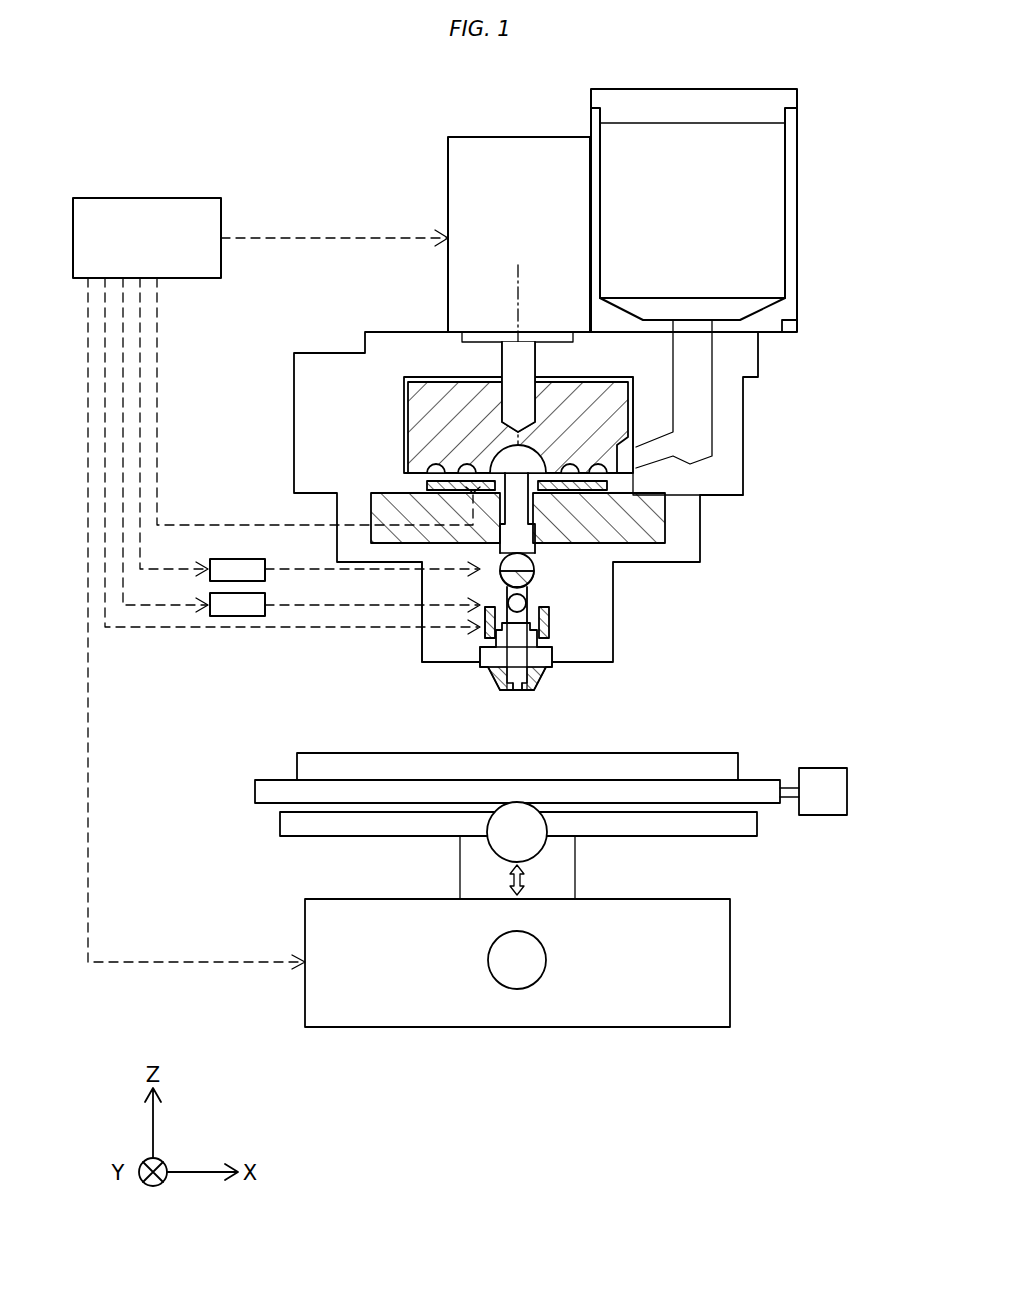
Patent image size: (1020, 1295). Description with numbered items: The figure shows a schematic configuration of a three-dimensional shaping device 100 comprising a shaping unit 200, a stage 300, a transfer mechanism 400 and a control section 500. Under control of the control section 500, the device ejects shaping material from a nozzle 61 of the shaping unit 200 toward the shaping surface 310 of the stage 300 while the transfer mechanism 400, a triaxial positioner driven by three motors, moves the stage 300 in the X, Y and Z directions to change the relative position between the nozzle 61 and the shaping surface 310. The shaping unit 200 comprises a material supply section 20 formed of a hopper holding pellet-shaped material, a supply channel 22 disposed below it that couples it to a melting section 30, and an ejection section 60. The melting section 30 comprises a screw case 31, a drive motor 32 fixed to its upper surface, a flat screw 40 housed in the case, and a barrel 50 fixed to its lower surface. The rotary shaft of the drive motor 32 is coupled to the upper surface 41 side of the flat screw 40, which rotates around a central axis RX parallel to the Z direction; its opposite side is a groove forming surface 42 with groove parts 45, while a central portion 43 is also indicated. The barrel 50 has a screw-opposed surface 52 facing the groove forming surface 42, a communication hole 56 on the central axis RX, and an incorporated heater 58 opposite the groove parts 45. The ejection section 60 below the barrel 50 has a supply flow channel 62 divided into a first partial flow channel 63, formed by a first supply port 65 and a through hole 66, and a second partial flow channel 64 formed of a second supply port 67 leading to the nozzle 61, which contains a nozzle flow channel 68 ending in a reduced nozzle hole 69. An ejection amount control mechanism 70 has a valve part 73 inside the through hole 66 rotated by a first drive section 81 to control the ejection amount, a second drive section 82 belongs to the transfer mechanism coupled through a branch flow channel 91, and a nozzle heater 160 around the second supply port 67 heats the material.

The three-dimensional shaping device 100 is at (192, 136).
The shaping unit 200 is at (322, 154).
The control section 500 is at (137, 198).
The material supply section 20 is at (797, 206).
The supply channel 22 is at (690, 394).
The melting section 30 is at (774, 455).
The screw case 31 is at (418, 332).
The drive motor 32 is at (448, 165).
The central axis RX is at (517, 272).
The flat screw 40 is at (430, 400).
The upper surface 41 is at (428, 378).
The groove forming surface 42 is at (412, 476).
The central portion 43 is at (488, 466).
The groove parts 45 is at (428, 470).
The barrel 50 is at (400, 513).
The screw-opposed surface 52 is at (430, 484).
The communication hole 56 is at (533, 514).
The heater 58 is at (452, 492).
The ejection section 60 is at (316, 668).
The nozzle 61 is at (545, 689).
The supply flow channel 62 is at (646, 640).
The first partial flow channel 63 is at (765, 562).
The second partial flow channel 64 is at (537, 642).
The first supply port 65 is at (535, 562).
The through hole 66 is at (527, 602).
The second supply port 67 is at (516, 656).
The nozzle flow channel 68 is at (548, 672).
The nozzle hole 69 is at (516, 690).
The ejection amount control mechanism 70 is at (360, 590).
The valve part 73 is at (506, 577).
The first drive section 81 is at (243, 559).
The second drive section 82 is at (228, 594).
The branch flow channel 91 is at (549, 615).
The nozzle heater 160 is at (484, 632).
The stage 300 is at (780, 727).
The shaping surface 310 is at (680, 753).
The transfer mechanism 400 is at (780, 882).